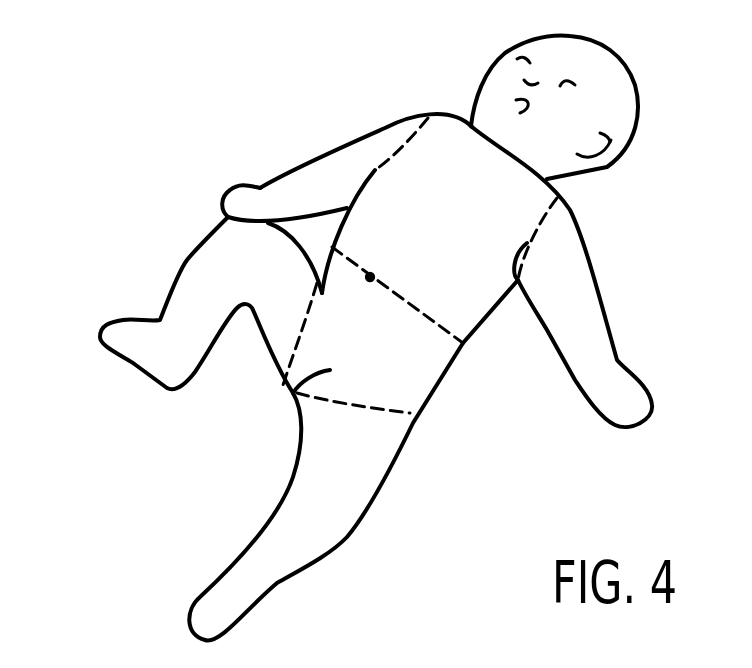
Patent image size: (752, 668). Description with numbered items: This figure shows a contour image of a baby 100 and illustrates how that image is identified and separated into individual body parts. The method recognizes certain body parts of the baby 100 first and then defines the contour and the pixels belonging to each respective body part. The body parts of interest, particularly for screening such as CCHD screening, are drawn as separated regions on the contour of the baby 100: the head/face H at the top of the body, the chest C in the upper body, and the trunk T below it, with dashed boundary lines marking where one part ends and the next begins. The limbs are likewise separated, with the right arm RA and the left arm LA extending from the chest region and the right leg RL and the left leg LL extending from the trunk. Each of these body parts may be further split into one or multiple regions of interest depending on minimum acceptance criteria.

The baby 100 is at (605, 226).
The head/face H is at (618, 82).
The chest C is at (443, 133).
The right arm RA is at (285, 190).
The left arm LA is at (600, 350).
The trunk T is at (417, 370).
The right leg RL is at (145, 352).
The left leg LL is at (240, 592).